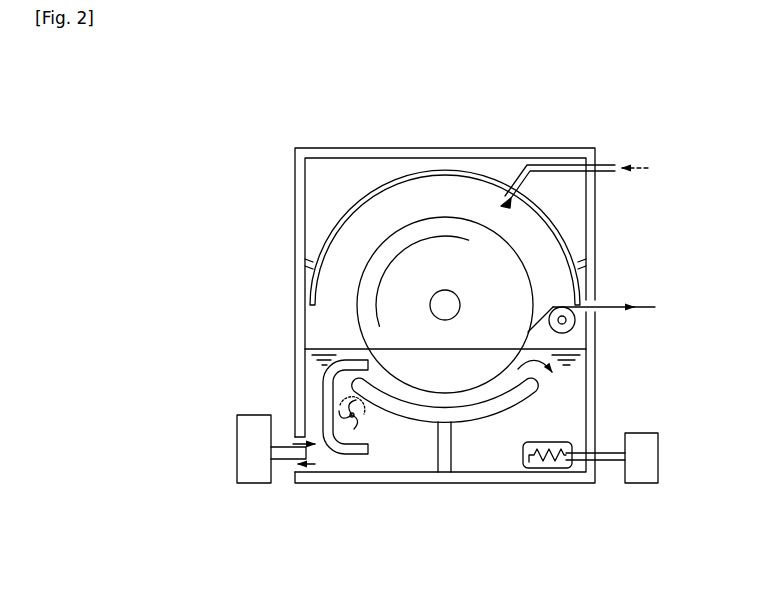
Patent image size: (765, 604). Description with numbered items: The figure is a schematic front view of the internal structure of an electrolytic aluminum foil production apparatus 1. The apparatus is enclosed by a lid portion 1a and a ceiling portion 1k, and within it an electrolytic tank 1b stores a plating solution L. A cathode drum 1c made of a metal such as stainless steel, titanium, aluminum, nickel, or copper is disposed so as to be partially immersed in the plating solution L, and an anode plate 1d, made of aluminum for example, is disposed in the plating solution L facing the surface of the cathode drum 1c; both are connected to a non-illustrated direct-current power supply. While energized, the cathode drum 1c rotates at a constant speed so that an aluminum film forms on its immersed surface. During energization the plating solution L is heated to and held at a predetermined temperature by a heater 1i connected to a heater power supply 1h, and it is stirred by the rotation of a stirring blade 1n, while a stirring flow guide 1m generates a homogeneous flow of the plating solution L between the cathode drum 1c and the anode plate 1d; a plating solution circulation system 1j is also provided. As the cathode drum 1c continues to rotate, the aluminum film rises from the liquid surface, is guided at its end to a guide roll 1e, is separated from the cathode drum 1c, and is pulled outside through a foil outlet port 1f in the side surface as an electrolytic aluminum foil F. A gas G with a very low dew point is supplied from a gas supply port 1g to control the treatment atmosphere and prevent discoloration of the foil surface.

The electrolytic aluminum foil production apparatus 1 is at (614, 534).
The lid portion 1a is at (417, 150).
The electrolytic tank 1b is at (306, 348).
The cathode drum 1c is at (363, 302).
The anode plate 1d is at (513, 405).
The guide roll 1e is at (572, 332).
The foil outlet port 1f is at (598, 309).
The gas supply port 1g is at (516, 170).
The heater power supply 1h is at (641, 443).
The heater 1i is at (558, 468).
The plating solution circulation system 1j is at (254, 483).
The ceiling portion 1k is at (467, 150).
The stirring flow guide 1m is at (332, 450).
The stirring blade 1n is at (357, 428).
The plating solution L is at (387, 463).
The gas G is at (633, 158).
The electrolytic aluminum foil F is at (610, 300).